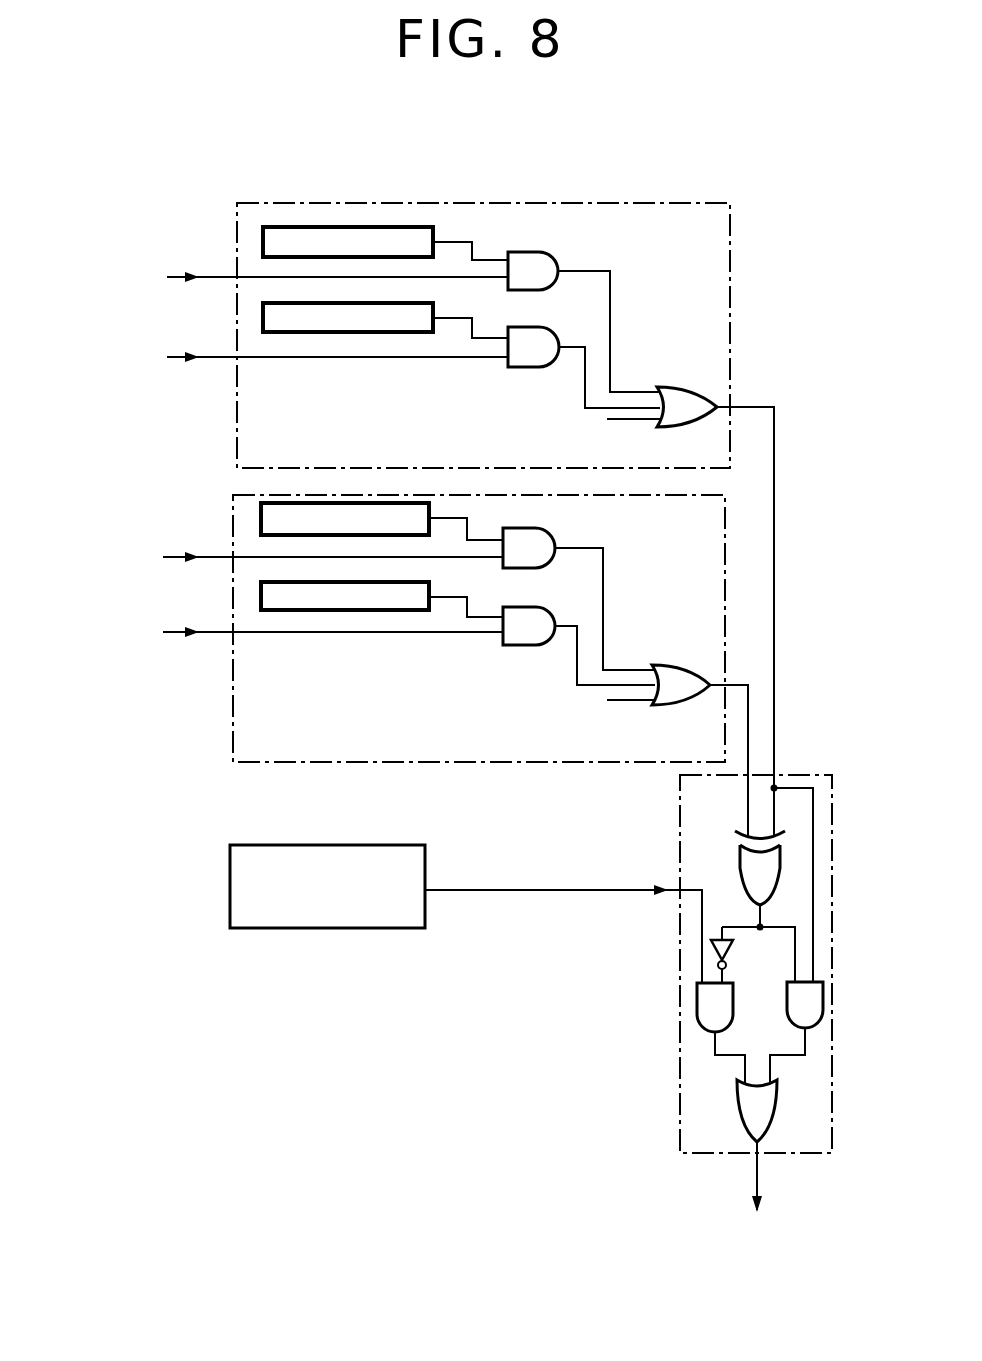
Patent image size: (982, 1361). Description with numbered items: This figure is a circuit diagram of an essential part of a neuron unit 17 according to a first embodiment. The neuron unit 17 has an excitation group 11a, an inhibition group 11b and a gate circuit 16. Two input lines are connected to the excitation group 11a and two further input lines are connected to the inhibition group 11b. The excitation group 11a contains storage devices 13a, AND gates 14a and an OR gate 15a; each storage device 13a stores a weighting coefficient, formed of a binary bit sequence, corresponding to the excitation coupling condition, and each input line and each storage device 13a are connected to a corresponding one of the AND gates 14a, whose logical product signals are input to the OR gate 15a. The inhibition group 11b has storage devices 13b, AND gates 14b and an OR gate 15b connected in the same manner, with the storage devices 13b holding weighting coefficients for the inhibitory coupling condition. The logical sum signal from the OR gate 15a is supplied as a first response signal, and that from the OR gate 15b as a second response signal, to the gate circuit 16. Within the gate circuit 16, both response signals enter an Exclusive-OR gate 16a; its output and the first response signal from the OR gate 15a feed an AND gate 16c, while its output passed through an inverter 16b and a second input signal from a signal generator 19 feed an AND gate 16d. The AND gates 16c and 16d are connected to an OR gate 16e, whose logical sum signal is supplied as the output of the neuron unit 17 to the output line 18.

The excitation group 11a is at (731, 262).
The inhibition group 11b is at (725, 577).
The storage devices 13a is at (352, 227).
The storage devices 13b is at (343, 503).
The AND gates 14a is at (540, 327).
The AND gates 14b is at (548, 566).
The OR gate 15a is at (677, 387).
The OR gate 15b is at (665, 665).
The gate circuit 16 is at (677, 972).
The Exclusive-OR gate 16a is at (745, 850).
The inverter 16b is at (733, 955).
The AND gate 16c is at (825, 1000).
The AND gate 16d is at (733, 1005).
The OR gate 16e is at (770, 1128).
The neuron unit 17 is at (750, 191).
The output line 18 is at (755, 1178).
The signal generator 19 is at (333, 928).